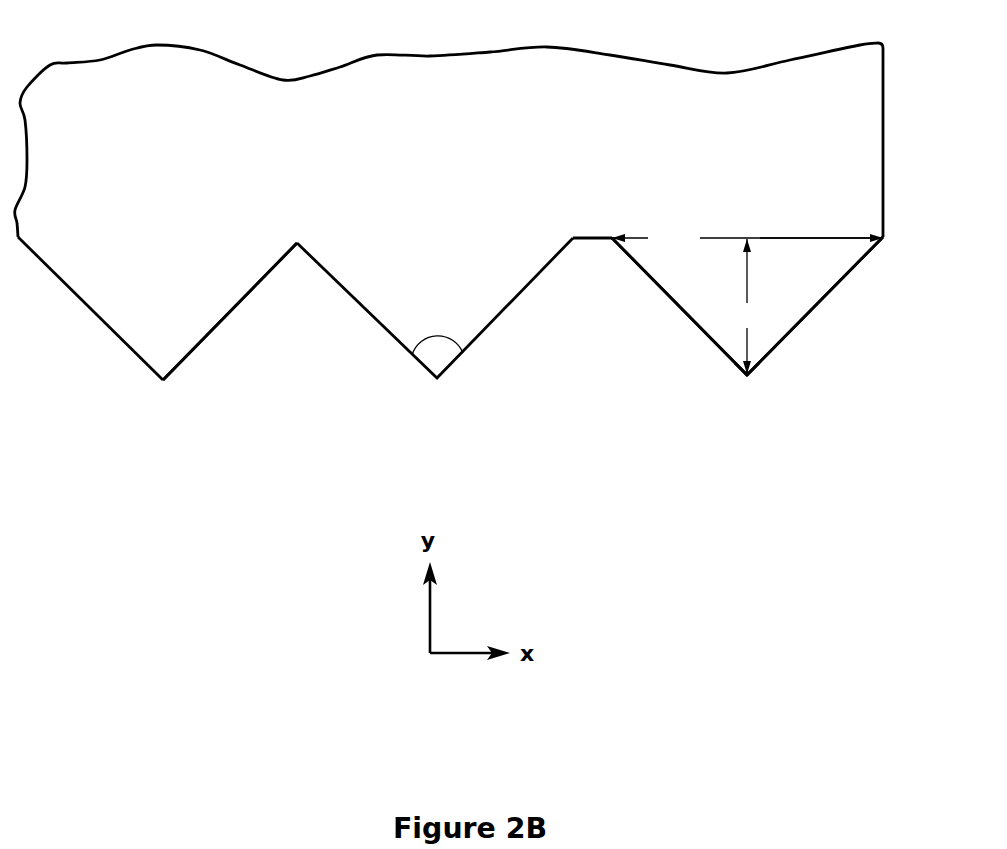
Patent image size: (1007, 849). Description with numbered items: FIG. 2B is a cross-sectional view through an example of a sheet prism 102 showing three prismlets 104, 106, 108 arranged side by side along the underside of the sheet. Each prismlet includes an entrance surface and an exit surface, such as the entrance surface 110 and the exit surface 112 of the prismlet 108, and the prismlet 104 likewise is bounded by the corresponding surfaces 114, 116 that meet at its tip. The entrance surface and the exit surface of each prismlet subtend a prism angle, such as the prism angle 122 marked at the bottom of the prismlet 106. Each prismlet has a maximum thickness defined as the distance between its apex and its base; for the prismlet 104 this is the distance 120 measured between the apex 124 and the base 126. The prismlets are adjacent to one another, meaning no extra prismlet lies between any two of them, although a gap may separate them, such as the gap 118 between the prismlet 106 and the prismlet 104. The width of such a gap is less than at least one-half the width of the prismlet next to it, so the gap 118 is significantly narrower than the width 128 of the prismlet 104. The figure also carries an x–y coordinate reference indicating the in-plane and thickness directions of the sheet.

The retroreflective article body 102 is at (449, 140).
The prismlet 104 is at (747, 306).
The prismlet 106 is at (435, 308).
The prismlet 108 is at (220, 311).
The entrance surface 110 is at (110, 337).
The exit surface 112 is at (227, 333).
The facet surface 114 is at (688, 325).
The facet surface 116 is at (808, 328).
The gap 118 is at (595, 237).
The distance 120 is at (748, 306).
The prism angle 122 is at (437, 333).
The apex 124 is at (745, 378).
The base 126 is at (765, 235).
The width 128 is at (747, 239).